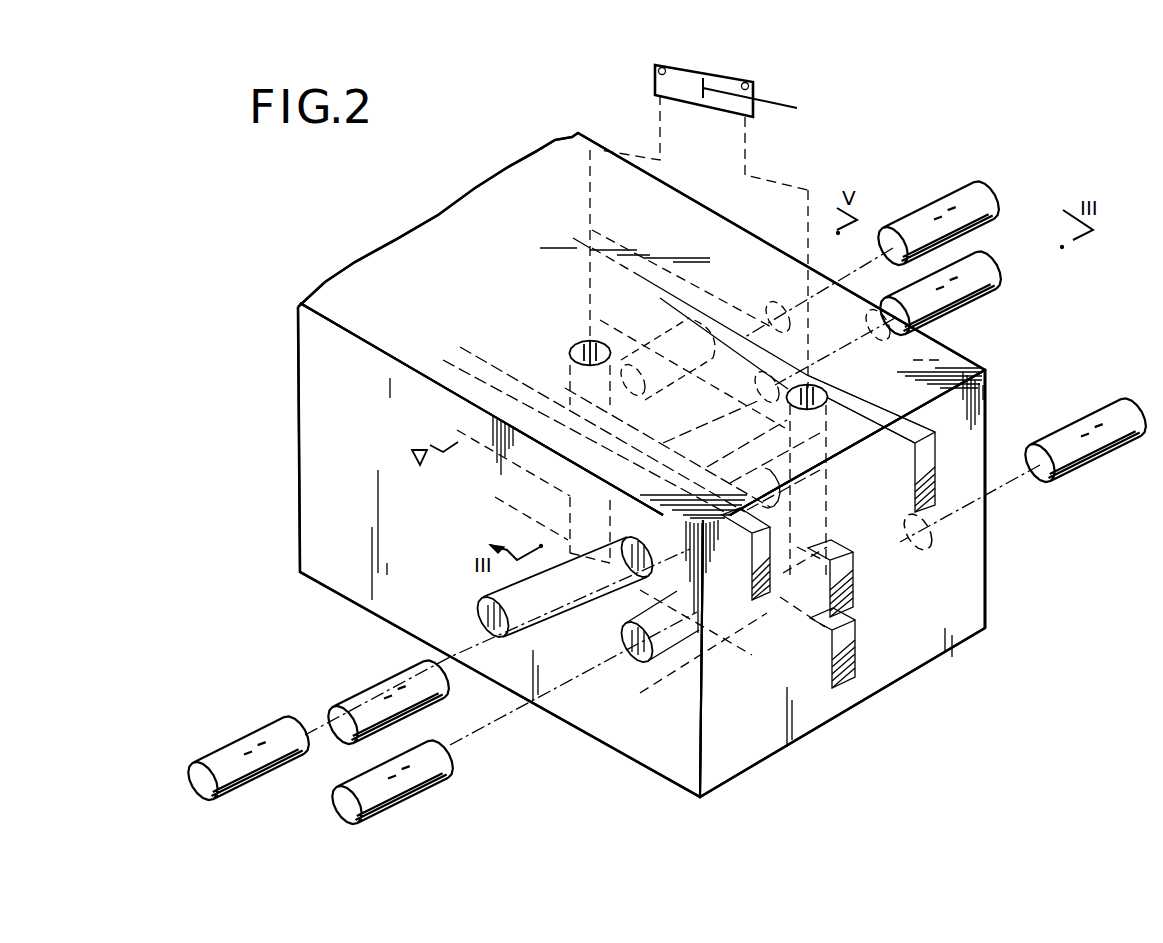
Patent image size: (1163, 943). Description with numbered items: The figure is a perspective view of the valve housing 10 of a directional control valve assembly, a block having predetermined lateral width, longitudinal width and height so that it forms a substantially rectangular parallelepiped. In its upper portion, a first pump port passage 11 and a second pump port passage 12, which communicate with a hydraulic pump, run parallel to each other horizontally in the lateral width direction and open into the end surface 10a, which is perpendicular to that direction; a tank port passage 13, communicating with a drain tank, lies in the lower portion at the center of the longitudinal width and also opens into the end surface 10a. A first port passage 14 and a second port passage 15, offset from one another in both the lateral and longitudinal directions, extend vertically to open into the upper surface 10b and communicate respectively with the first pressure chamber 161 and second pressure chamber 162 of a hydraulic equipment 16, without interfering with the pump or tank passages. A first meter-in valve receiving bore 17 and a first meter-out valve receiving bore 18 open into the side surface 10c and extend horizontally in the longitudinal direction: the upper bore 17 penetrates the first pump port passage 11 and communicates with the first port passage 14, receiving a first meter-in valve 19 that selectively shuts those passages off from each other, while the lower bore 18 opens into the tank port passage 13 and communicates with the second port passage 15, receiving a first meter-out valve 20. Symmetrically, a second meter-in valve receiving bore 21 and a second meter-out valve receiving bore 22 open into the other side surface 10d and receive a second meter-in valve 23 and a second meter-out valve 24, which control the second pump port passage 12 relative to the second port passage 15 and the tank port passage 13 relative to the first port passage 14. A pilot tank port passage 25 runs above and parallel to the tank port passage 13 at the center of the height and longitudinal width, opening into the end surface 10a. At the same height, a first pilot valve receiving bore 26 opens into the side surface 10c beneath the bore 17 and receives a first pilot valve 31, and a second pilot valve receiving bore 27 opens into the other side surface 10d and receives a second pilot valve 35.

The valve housing 10 is at (992, 378).
The end surface 10a is at (975, 548).
The upper surface 10b is at (690, 208).
The side surface 10c is at (602, 745).
The other side surface 10d is at (988, 518).
The first pump port passage 11 is at (757, 610).
The second pump port passage 12 is at (930, 456).
The tank port passage 13 is at (868, 660).
The first port passage 14 is at (822, 393).
The second port passage 15 is at (580, 350).
The hydraulic equipment 16 is at (700, 72).
The first pressure chamber 161 is at (749, 84).
The second pressure chamber 162 is at (662, 68).
The first meter-in valve receiving bore 17 is at (632, 576).
The first meter-out valve receiving bore 18 is at (480, 605).
The first meter-in valve 19 is at (340, 750).
The first meter-out valve 20 is at (235, 735).
The second meter-in valve receiving bore 21 is at (775, 304).
The second meter-out valve receiving bore 22 is at (930, 545).
The second meter-in valve 23 is at (972, 190).
The second meter-out valve 24 is at (1110, 450).
The pilot tank port passage 25 is at (862, 600).
The first pilot valve receiving bore 26 is at (640, 664).
The second pilot valve receiving bore 27 is at (768, 385).
The first pilot valve 31 is at (400, 778).
The second pilot valve 35 is at (988, 272).